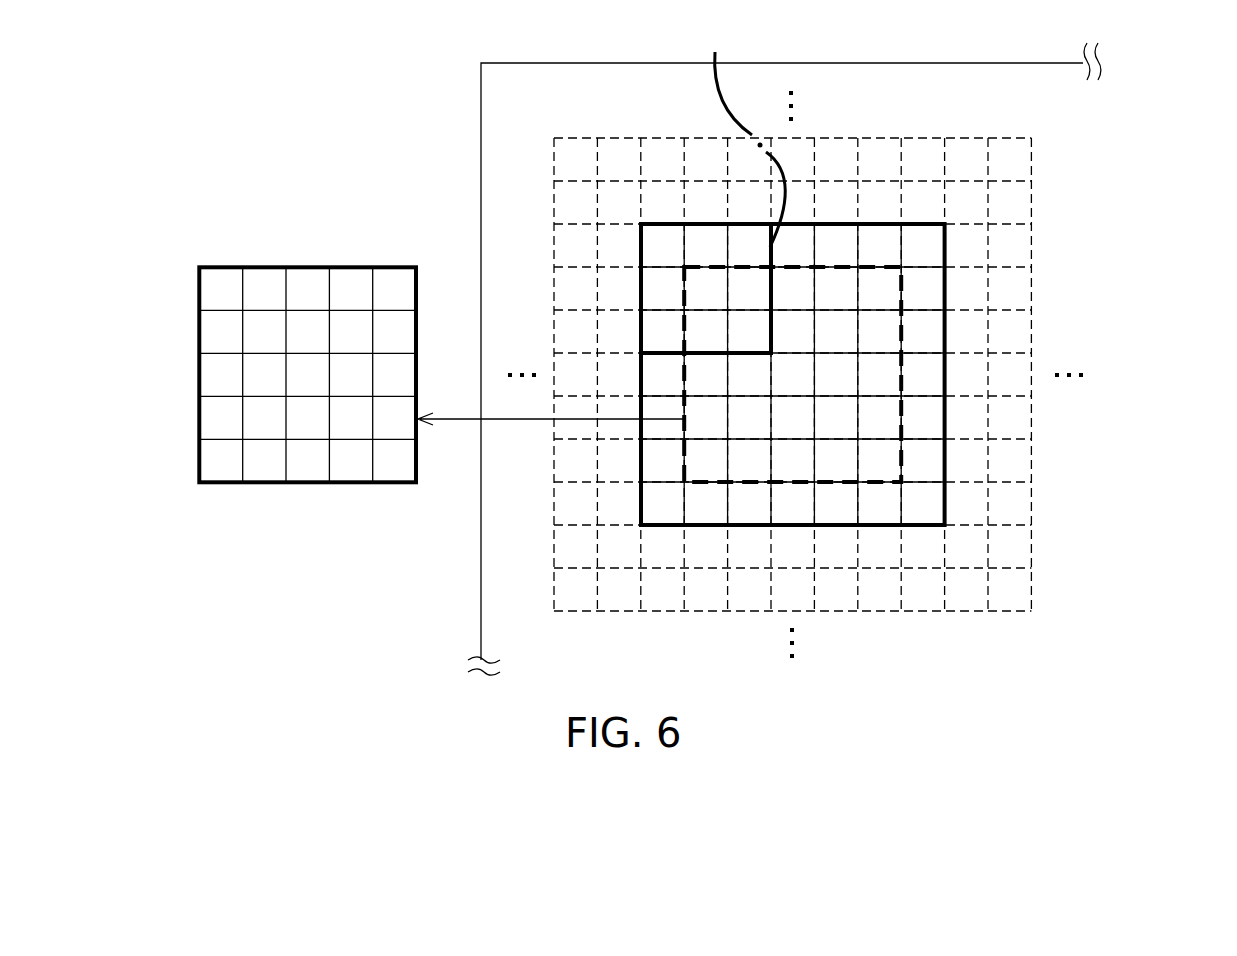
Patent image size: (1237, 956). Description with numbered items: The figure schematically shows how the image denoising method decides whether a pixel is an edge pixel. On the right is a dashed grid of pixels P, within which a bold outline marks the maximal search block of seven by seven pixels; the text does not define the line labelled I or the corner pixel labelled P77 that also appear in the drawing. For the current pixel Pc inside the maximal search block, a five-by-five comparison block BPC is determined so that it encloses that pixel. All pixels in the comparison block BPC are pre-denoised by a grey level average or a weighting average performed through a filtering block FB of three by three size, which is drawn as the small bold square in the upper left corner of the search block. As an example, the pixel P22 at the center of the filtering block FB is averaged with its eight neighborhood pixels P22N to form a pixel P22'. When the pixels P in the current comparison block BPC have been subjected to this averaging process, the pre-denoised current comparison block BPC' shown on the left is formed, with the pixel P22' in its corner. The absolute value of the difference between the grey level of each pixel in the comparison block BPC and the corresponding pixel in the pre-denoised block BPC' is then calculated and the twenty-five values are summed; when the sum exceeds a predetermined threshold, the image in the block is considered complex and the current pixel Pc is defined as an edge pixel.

The input image signal line I is at (481, 182).
The filtering block FB is at (737, 131).
The pixel P is at (1007, 158).
The current comparison block BPC is at (930, 374).
The pre-denoised current comparison block BPC' is at (304, 333).
The neighborhood pixels P22N is at (706, 288).
The pixel P22 is at (705, 288).
The pre-denoised pixel P22' is at (220, 288).
The current pixel Pc is at (792, 374).
The pixel P77 is at (922, 503).